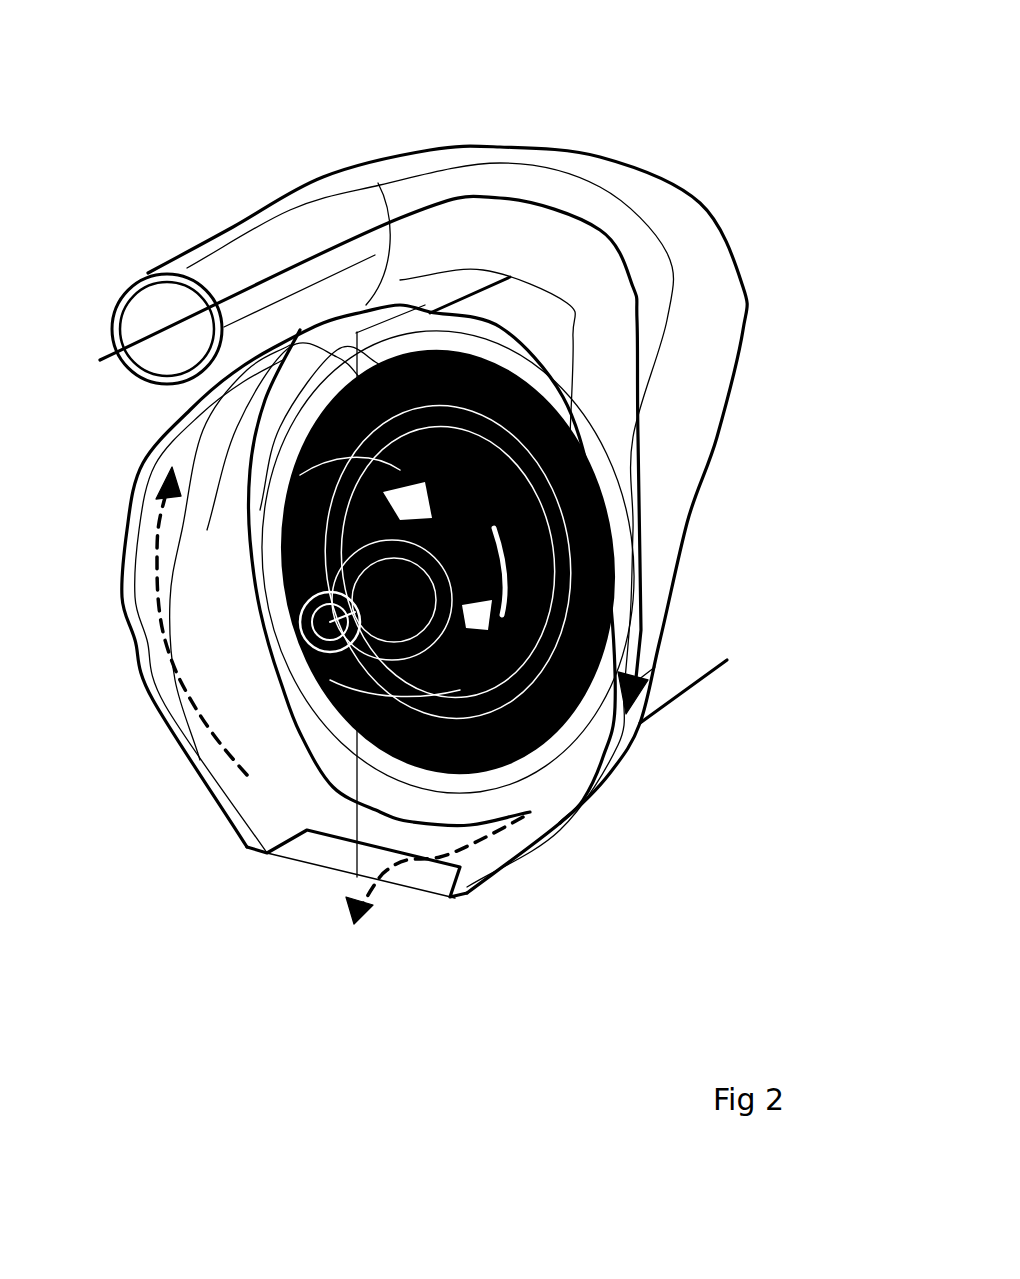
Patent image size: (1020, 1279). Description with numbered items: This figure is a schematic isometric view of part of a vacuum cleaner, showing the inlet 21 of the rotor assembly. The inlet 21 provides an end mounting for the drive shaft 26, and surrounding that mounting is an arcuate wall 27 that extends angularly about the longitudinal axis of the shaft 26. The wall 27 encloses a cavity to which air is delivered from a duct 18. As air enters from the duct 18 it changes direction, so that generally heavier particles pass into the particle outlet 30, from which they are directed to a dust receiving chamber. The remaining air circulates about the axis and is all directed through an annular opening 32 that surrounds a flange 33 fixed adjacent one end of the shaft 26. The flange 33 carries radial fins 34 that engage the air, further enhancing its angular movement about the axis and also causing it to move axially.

The duct 18 is at (245, 240).
The inlet 21 is at (735, 110).
The drive shaft 26 is at (360, 620).
The wall 27 is at (223, 767).
The particle outlet 30 is at (320, 845).
The annular opening 32 is at (402, 748).
The flange 33 is at (453, 603).
The fins 34 is at (477, 560).